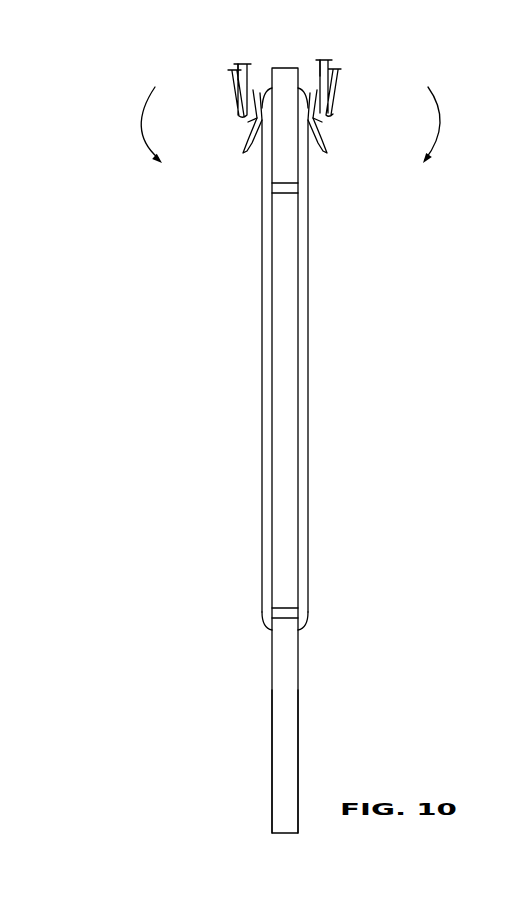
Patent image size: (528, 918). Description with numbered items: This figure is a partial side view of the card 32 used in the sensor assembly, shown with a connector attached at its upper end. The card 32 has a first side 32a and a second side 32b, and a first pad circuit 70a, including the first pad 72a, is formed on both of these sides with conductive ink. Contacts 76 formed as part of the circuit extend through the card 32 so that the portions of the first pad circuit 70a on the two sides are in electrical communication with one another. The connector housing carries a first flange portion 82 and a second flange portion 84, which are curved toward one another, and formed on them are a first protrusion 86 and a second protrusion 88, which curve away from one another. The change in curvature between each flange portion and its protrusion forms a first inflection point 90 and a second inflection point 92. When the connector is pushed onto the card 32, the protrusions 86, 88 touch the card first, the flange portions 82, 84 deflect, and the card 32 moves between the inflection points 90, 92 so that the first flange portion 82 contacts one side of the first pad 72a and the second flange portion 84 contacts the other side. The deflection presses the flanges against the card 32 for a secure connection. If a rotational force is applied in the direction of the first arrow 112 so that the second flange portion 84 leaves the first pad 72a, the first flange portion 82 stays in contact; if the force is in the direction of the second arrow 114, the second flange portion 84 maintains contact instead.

The card 32 is at (278, 777).
The first side of the card 32a is at (298, 690).
The second side of the card 32b is at (272, 728).
The first pad circuit 70a is at (265, 495).
The first pad 72a is at (258, 86).
The contacts 76 is at (282, 192).
The first flange portion 82 is at (330, 95).
The second flange portion 84 is at (240, 95).
The first protrusion 86 is at (329, 157).
The second protrusion 88 is at (241, 157).
The first inflection point 90 is at (318, 124).
The second inflection point 92 is at (250, 125).
The first arrow 112 is at (441, 125).
The second arrow 114 is at (141, 125).